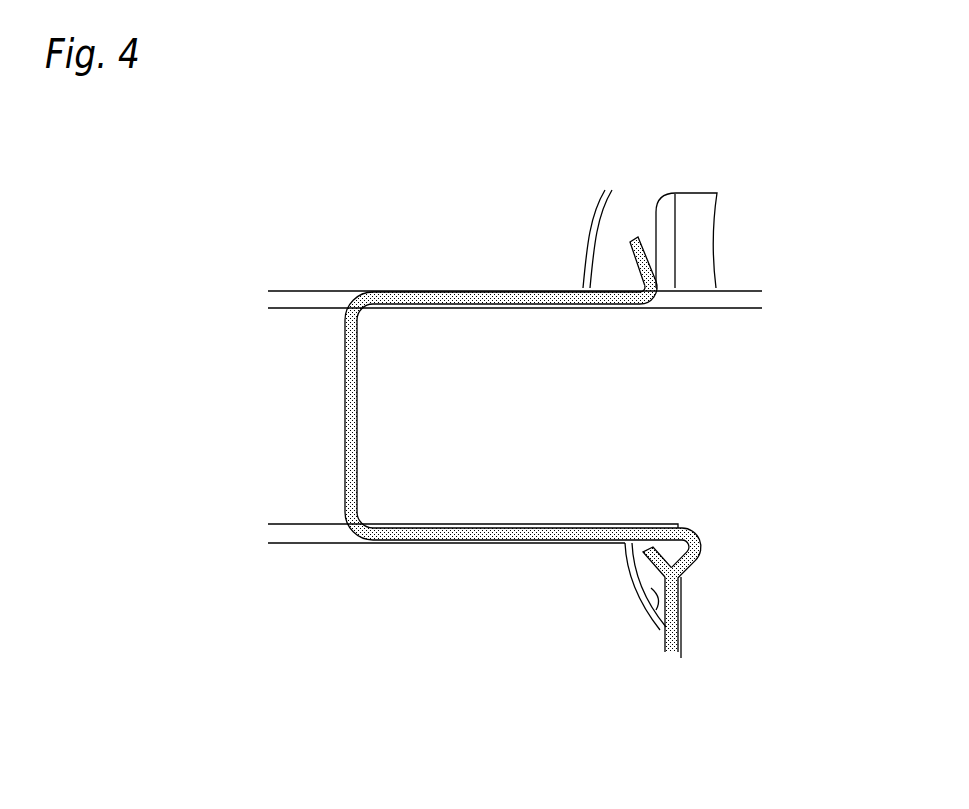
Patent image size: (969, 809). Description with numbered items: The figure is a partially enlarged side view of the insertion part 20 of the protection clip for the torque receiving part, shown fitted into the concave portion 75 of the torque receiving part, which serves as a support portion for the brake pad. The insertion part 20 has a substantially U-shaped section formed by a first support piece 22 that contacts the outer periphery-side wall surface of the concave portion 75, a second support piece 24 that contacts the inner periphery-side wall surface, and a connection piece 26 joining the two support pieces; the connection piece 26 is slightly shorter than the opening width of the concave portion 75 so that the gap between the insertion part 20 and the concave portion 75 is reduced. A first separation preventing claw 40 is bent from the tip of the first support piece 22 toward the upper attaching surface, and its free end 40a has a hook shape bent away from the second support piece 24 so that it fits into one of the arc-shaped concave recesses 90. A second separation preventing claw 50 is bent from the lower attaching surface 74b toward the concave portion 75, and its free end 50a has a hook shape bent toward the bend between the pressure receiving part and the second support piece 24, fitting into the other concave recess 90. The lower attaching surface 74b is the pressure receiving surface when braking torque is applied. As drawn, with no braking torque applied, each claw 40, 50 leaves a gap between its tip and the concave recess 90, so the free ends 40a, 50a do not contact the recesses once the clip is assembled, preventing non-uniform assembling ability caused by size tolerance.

The insertion part 20 is at (434, 406).
The first support piece 22 is at (407, 292).
The second support piece 24 is at (482, 545).
The connection piece 26 is at (345, 413).
The first separation preventing claw 40 is at (602, 222).
The free end of the first separation preventing claw 40a is at (637, 233).
The second separation preventing claw 50 is at (635, 565).
The free end of the second separation preventing claw 50a is at (645, 547).
The concave portion 75 is at (713, 405).
The lower attaching surface 74b is at (680, 615).
The concave recess 90 is at (621, 210).